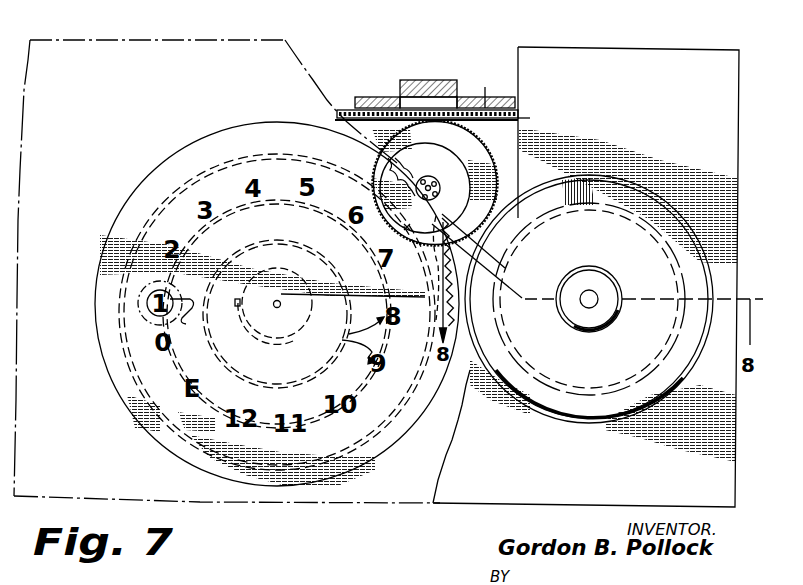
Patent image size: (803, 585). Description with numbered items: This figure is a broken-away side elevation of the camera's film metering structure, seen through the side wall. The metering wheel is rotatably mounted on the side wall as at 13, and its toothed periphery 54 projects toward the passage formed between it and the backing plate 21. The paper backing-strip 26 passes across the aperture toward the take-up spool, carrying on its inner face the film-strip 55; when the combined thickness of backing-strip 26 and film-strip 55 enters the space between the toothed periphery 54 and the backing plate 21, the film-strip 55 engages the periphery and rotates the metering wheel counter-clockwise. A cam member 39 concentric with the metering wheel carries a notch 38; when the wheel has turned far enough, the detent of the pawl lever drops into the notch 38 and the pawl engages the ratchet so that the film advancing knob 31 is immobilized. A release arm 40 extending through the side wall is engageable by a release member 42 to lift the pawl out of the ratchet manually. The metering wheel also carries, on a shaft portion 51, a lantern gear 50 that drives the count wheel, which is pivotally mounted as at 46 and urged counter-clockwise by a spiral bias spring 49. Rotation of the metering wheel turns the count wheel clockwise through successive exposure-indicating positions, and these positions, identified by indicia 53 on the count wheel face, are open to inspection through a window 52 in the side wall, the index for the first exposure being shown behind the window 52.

The rotatable mounting 13 is at (420, 180).
The backing plate 21 is at (448, 98).
The paper backing-strip 26 is at (435, 91).
The film advancing knob 31 is at (589, 299).
The notch 38 is at (430, 230).
The cam member 39 is at (441, 147).
The release arm 40 is at (597, 256).
The release member 42 is at (447, 268).
The pivotal mounting 46 is at (279, 301).
The bias spring 49 is at (333, 378).
The lantern gear 50 is at (437, 182).
The shaft portion 51 is at (438, 192).
The window 52 is at (158, 325).
The indicia 53 is at (277, 331).
The toothed periphery 54 is at (388, 127).
The film-strip 55 is at (498, 120).